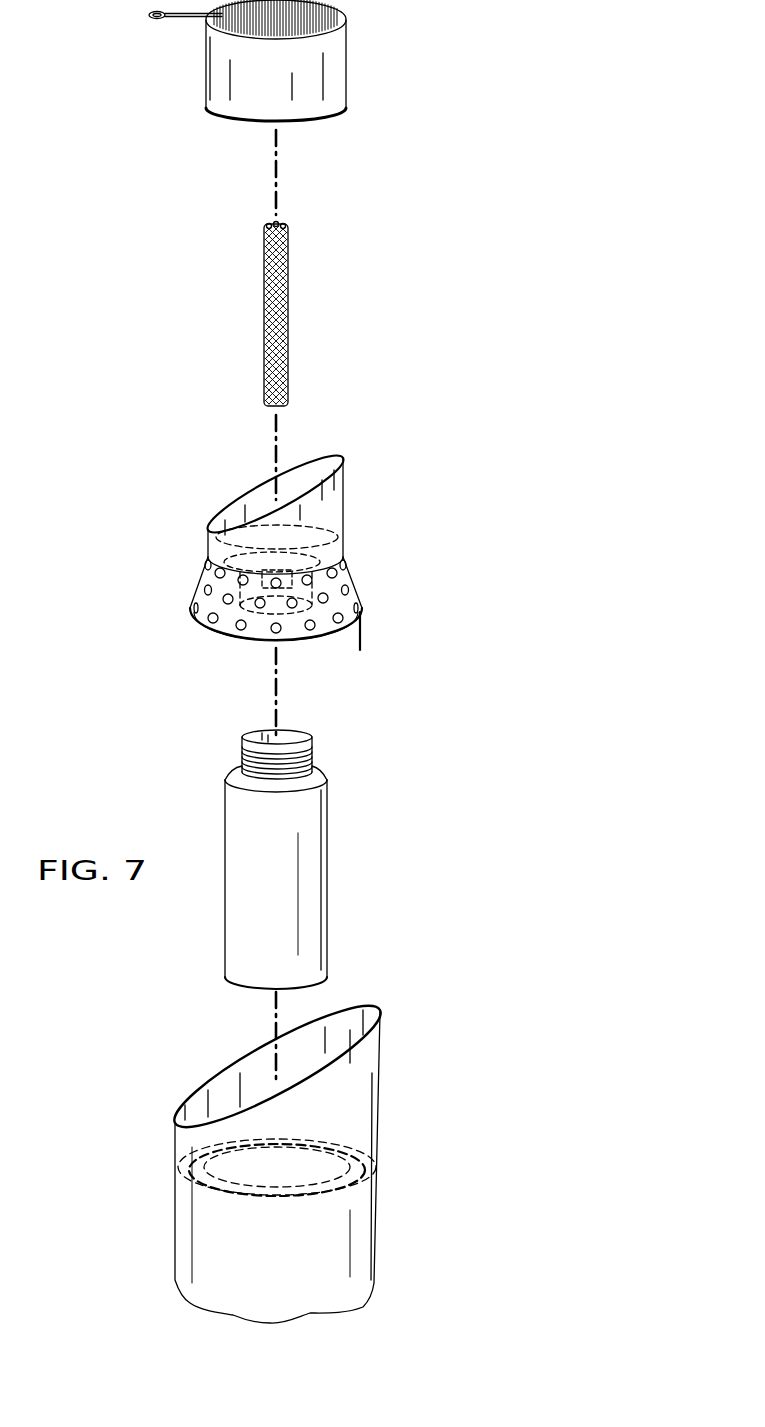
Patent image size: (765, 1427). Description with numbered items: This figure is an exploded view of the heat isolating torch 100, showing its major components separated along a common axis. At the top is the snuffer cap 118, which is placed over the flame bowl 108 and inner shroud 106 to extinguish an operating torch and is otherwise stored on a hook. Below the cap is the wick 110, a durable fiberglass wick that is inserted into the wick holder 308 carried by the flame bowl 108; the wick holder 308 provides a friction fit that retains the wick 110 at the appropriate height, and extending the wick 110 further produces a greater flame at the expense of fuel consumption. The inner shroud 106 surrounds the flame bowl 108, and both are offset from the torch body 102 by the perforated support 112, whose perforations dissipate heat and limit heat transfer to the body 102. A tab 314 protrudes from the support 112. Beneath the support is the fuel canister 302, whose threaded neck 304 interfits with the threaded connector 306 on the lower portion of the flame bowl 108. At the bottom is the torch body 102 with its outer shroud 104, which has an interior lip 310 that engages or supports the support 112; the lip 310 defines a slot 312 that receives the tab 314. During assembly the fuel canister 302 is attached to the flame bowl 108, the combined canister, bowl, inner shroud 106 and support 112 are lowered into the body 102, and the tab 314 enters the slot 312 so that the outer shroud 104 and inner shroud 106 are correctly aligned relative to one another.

The torch 100 is at (166, 216).
The snuffer cap 118 is at (347, 62).
The wick 110 is at (288, 304).
The inner shroud 106 is at (343, 492).
The flame bowl 108 is at (320, 540).
The support 112 is at (196, 592).
The wick holder 308 is at (270, 607).
The threaded connector 306 is at (310, 606).
The tab 314 is at (362, 638).
The fuel canister 302 is at (328, 873).
The threaded neck 304 is at (242, 752).
The body 102 is at (373, 1230).
The outer shroud 104 is at (381, 1072).
The slot 312 is at (363, 1163).
The lip 310 is at (232, 1197).